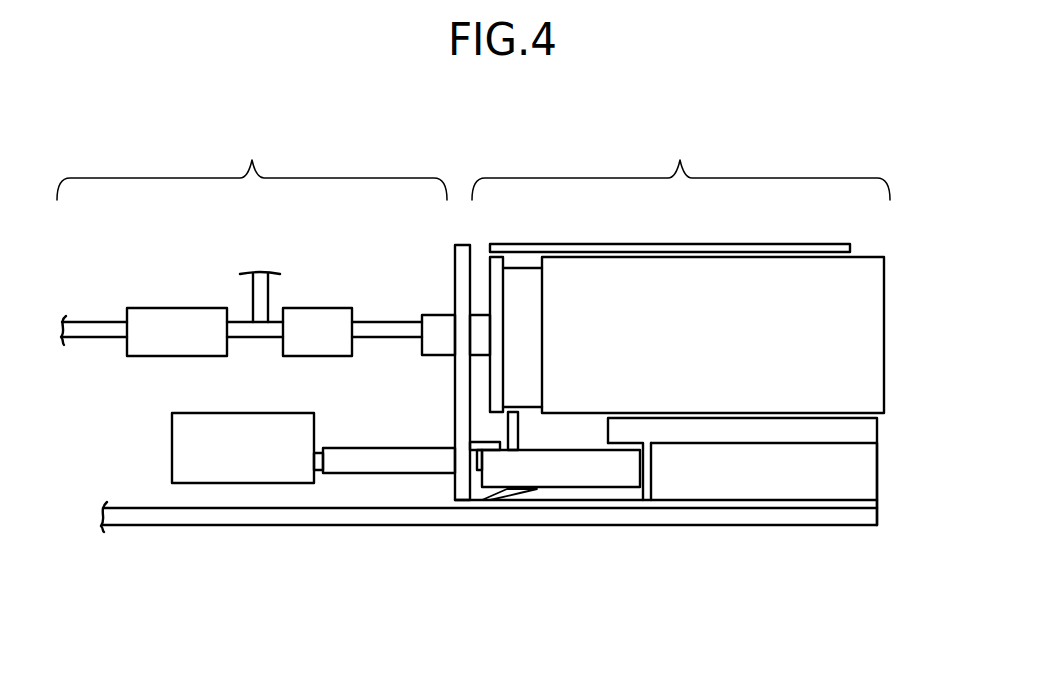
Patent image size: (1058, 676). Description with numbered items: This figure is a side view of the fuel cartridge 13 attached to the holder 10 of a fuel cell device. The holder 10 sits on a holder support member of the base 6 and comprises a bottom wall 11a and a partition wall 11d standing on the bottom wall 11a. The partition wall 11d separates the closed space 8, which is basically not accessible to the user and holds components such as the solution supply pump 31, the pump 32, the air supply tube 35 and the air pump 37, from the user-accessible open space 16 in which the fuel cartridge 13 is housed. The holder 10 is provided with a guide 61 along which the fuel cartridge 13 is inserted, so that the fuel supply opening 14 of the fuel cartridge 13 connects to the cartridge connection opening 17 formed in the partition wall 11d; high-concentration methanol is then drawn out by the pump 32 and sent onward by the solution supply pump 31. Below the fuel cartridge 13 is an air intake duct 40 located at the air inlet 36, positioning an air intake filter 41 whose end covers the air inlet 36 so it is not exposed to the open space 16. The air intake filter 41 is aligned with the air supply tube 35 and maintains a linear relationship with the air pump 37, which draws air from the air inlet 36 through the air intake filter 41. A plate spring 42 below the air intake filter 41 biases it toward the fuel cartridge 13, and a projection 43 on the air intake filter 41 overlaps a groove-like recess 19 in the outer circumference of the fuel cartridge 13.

The base 6 is at (852, 517).
The closed space 8 is at (273, 354).
The holder 10 is at (899, 247).
The bottom wall 11a is at (853, 505).
The partition wall 11d is at (463, 245).
The fuel cartridge 13 is at (875, 333).
The fuel supply opening 14 is at (481, 323).
The open space 16 is at (706, 327).
The cartridge connection opening 17 is at (438, 318).
The recess 19 is at (520, 355).
The solution supply pump 31 is at (165, 345).
The pump 32 is at (325, 345).
The air supply tube 35 is at (364, 458).
The air inlet 36 is at (478, 458).
The air pump 37 is at (248, 462).
The air intake duct 40 is at (545, 482).
The air intake filter 41 is at (594, 457).
The plate spring 42 is at (515, 500).
The projection 43 is at (518, 433).
The guide 61 is at (813, 246).